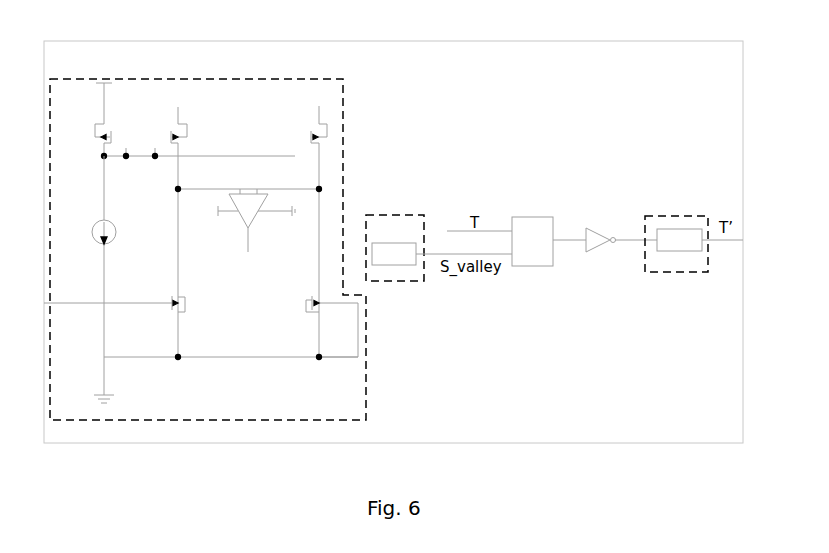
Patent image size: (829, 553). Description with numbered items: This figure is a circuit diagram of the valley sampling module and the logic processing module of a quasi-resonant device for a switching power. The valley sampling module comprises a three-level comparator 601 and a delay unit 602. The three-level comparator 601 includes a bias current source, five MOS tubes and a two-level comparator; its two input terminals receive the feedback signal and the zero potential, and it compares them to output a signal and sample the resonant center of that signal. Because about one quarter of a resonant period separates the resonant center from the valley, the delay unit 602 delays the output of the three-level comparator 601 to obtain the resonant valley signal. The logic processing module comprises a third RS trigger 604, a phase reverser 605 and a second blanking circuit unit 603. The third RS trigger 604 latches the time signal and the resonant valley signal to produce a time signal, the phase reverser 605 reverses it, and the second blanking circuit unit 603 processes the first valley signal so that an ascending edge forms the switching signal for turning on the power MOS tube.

The three-level comparator 601 is at (344, 121).
The delay unit 602 is at (393, 215).
The second blanking circuit unit 603 is at (666, 216).
The third RS trigger 604 is at (534, 217).
The phase reverser 605 is at (593, 228).